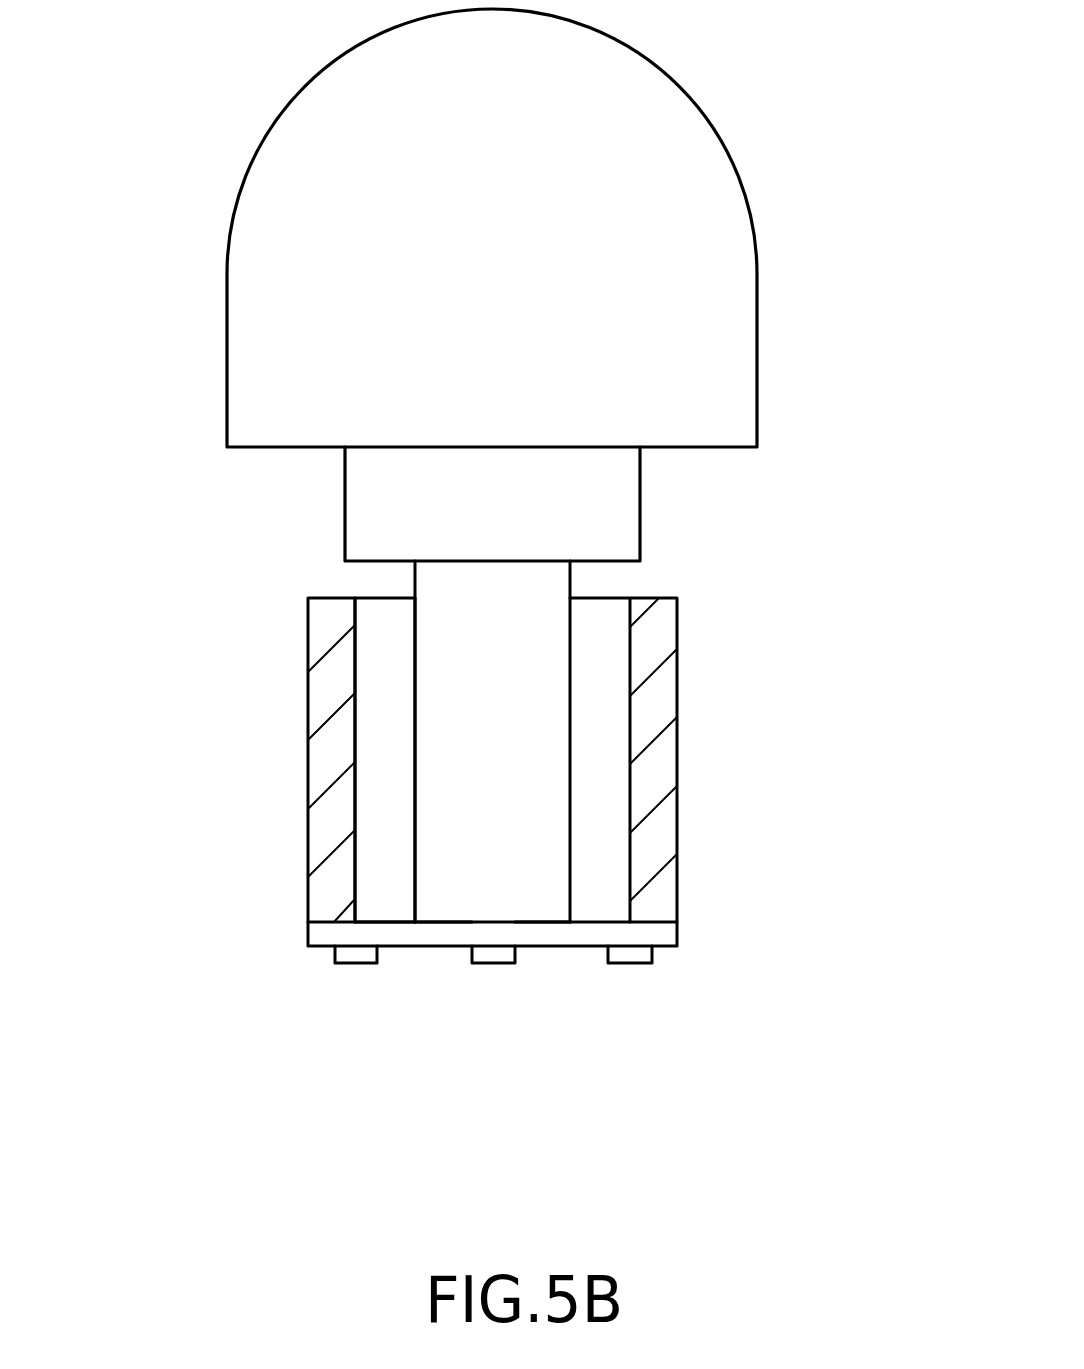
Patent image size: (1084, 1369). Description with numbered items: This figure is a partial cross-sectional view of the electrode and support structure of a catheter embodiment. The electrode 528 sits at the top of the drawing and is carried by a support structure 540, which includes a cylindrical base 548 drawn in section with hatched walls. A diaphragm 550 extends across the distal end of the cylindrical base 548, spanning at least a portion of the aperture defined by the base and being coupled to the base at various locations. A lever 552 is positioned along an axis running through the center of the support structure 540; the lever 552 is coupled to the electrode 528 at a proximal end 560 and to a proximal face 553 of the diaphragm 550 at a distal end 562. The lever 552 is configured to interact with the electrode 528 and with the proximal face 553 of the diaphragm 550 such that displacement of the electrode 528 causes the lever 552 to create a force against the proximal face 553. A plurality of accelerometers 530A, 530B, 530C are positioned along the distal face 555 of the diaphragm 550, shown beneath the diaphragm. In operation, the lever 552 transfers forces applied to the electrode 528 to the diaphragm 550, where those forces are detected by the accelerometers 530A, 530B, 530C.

The electrode 528 is at (227, 345).
The proximal end 560 is at (550, 559).
The lever 552 is at (440, 576).
The support structure 540 is at (565, 830).
The cylindrical base 548 is at (666, 759).
The diaphragm 550 is at (666, 930).
The proximal face 553 is at (412, 920).
The accelerometer 530A is at (350, 963).
The accelerometer 530B is at (495, 963).
The accelerometer 530C is at (630, 963).
The distal face 555 is at (430, 946).
The distal end 562 is at (540, 921).